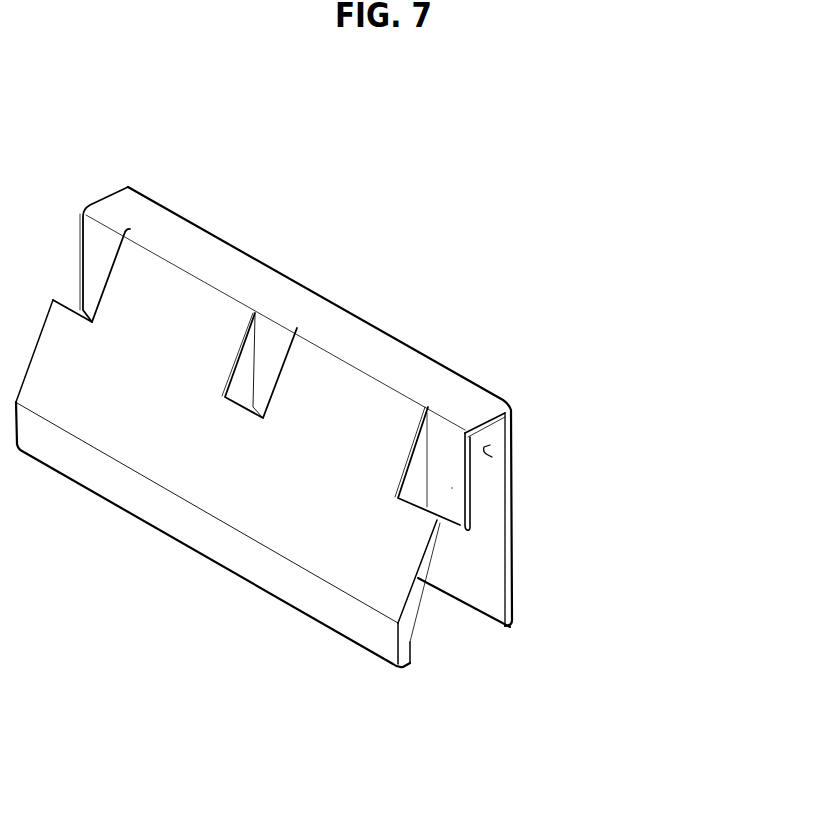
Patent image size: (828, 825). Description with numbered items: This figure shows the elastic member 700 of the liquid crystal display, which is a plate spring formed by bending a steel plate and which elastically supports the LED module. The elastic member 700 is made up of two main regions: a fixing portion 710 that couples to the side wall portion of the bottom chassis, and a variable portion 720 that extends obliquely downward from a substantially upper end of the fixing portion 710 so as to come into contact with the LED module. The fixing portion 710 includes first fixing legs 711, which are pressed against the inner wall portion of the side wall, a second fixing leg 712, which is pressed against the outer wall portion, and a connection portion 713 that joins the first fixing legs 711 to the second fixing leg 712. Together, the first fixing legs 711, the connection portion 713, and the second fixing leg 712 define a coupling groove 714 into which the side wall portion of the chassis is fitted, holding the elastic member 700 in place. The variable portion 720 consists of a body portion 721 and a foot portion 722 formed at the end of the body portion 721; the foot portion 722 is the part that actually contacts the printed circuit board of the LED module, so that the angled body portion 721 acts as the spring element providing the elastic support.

The elastic member 700 is at (82, 71).
The fixing portion 710 is at (394, 407).
The first fixing legs 711 is at (452, 488).
The second fixing leg 712 is at (514, 410).
The connection portion 713 is at (473, 403).
The coupling groove 714 is at (490, 445).
The variable portion 720 is at (228, 586).
The body portion 721 is at (353, 570).
The foot portion 722 is at (285, 588).